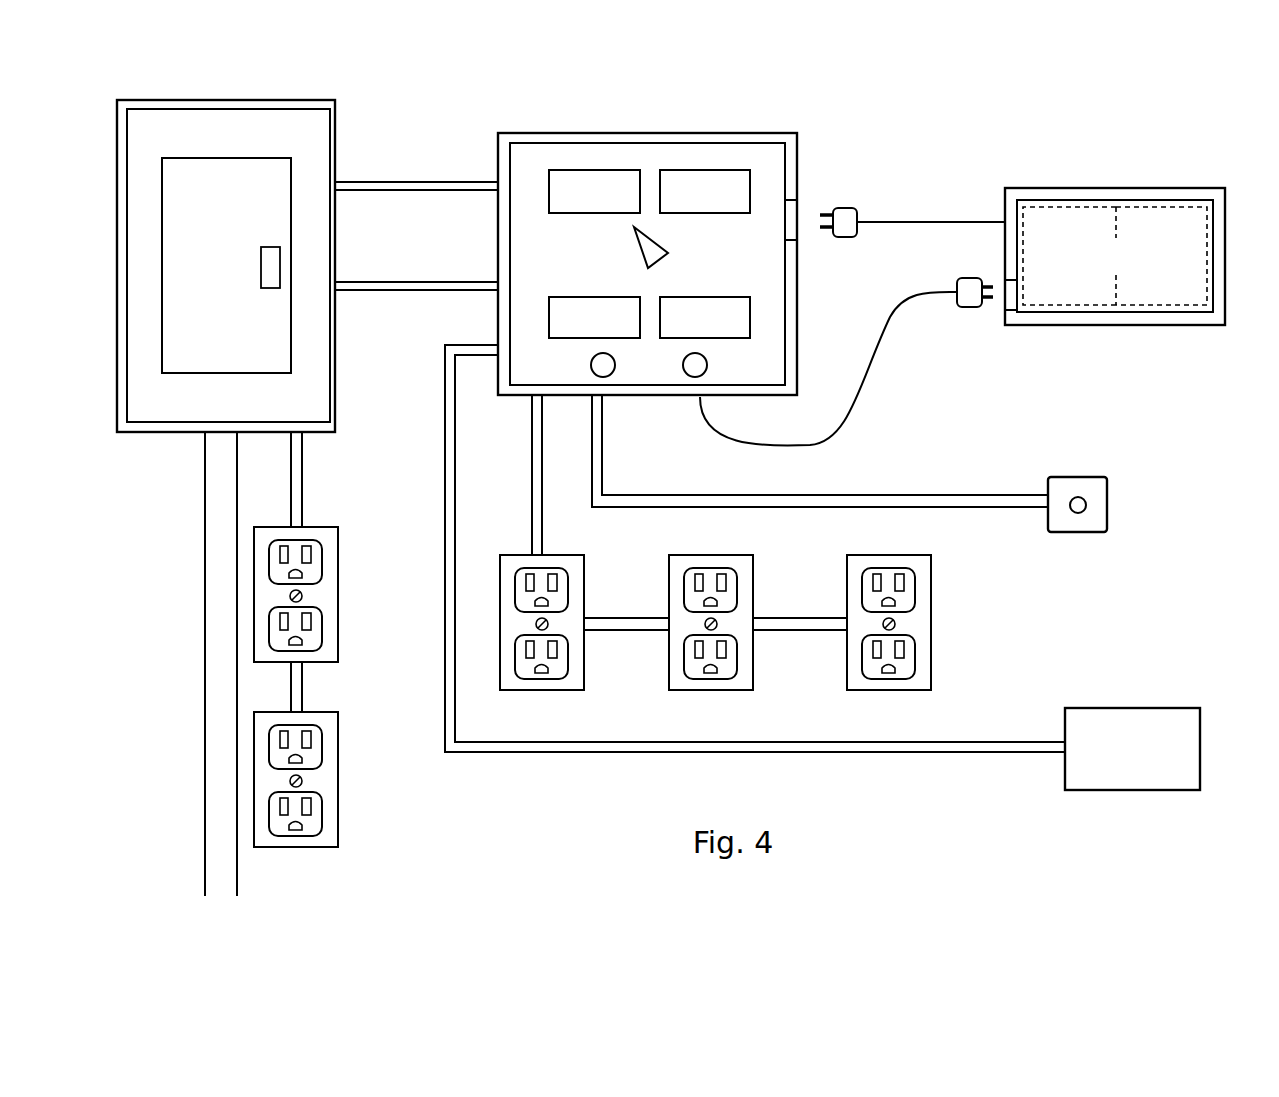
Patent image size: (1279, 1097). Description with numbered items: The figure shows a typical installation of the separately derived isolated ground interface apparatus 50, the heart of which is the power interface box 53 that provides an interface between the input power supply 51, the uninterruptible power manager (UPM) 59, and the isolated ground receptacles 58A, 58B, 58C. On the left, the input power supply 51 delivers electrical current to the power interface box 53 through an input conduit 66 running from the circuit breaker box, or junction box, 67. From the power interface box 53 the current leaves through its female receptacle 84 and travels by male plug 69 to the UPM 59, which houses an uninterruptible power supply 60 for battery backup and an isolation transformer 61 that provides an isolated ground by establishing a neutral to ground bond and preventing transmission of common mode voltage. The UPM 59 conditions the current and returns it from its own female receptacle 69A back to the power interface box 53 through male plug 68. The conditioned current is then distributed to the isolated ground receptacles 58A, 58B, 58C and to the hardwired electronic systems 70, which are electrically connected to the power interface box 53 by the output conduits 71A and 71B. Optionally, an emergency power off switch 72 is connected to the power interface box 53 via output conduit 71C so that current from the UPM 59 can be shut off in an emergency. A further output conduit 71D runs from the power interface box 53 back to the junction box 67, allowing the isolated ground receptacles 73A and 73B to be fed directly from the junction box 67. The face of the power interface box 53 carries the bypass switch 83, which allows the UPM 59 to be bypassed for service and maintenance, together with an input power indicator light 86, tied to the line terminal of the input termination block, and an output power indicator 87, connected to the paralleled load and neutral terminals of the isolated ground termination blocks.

The separately derived isolated ground interface apparatus 50 is at (505, 68).
The input power supply 51 is at (209, 643).
The power interface box 53 is at (700, 152).
The isolated ground receptacle 58A is at (575, 577).
The isolated ground receptacle 58B is at (747, 575).
The isolated ground receptacle 58C is at (923, 575).
The uninterruptible power manager (UPM) 59 is at (1118, 190).
The uninterruptible power supply (UPS) 60 is at (1053, 220).
The isolation transformer 61 is at (1170, 220).
The input conduit 66 is at (393, 182).
The circuit breaker box (junction box) 67 is at (267, 117).
The male plug 68 is at (967, 300).
The male plug 69 is at (843, 213).
The female receptacle 69A is at (1008, 300).
The hardwired electronic systems 70 is at (1195, 723).
The output conduit 71A is at (515, 745).
The output conduit 71B is at (537, 483).
The output conduit 71C is at (598, 465).
The output conduit 71D is at (398, 290).
The emergency power off (EPO) switch 72 is at (1107, 502).
The isolated ground receptacle 73A is at (332, 553).
The isolated ground receptacle 73B is at (329, 750).
The bypass switch 83 is at (648, 238).
The female receptacle 84 is at (797, 213).
The input power indicator light 86 is at (591, 365).
The output power indicator 87 is at (687, 372).